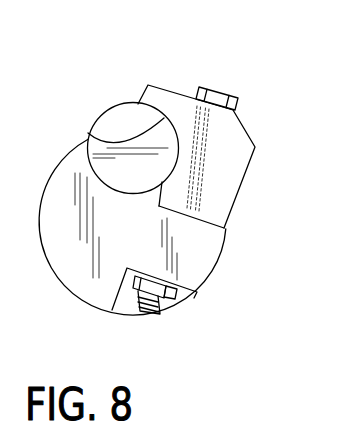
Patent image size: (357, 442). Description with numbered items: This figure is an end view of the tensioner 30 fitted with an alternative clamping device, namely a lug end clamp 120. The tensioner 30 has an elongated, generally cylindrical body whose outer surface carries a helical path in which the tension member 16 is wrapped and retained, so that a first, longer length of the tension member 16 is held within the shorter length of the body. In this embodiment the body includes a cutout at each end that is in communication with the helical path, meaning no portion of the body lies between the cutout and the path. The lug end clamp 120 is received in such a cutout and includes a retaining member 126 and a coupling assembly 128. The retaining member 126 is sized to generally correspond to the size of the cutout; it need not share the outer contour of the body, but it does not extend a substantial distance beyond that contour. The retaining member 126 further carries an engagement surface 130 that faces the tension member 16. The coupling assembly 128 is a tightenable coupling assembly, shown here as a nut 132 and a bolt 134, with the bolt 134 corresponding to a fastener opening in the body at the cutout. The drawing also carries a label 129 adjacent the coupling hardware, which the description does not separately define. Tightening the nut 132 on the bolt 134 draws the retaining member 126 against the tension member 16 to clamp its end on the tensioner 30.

The tension member 16 is at (99, 118).
The tensioner 30 is at (207, 255).
The lug end clamp 120 is at (220, 162).
The retaining member 126 is at (215, 205).
The coupling assembly 128 is at (225, 62).
The nut 129 is at (179, 291).
The engagement surface 130 is at (95, 127).
The nut 132 is at (158, 312).
The bolt 134 is at (221, 93).